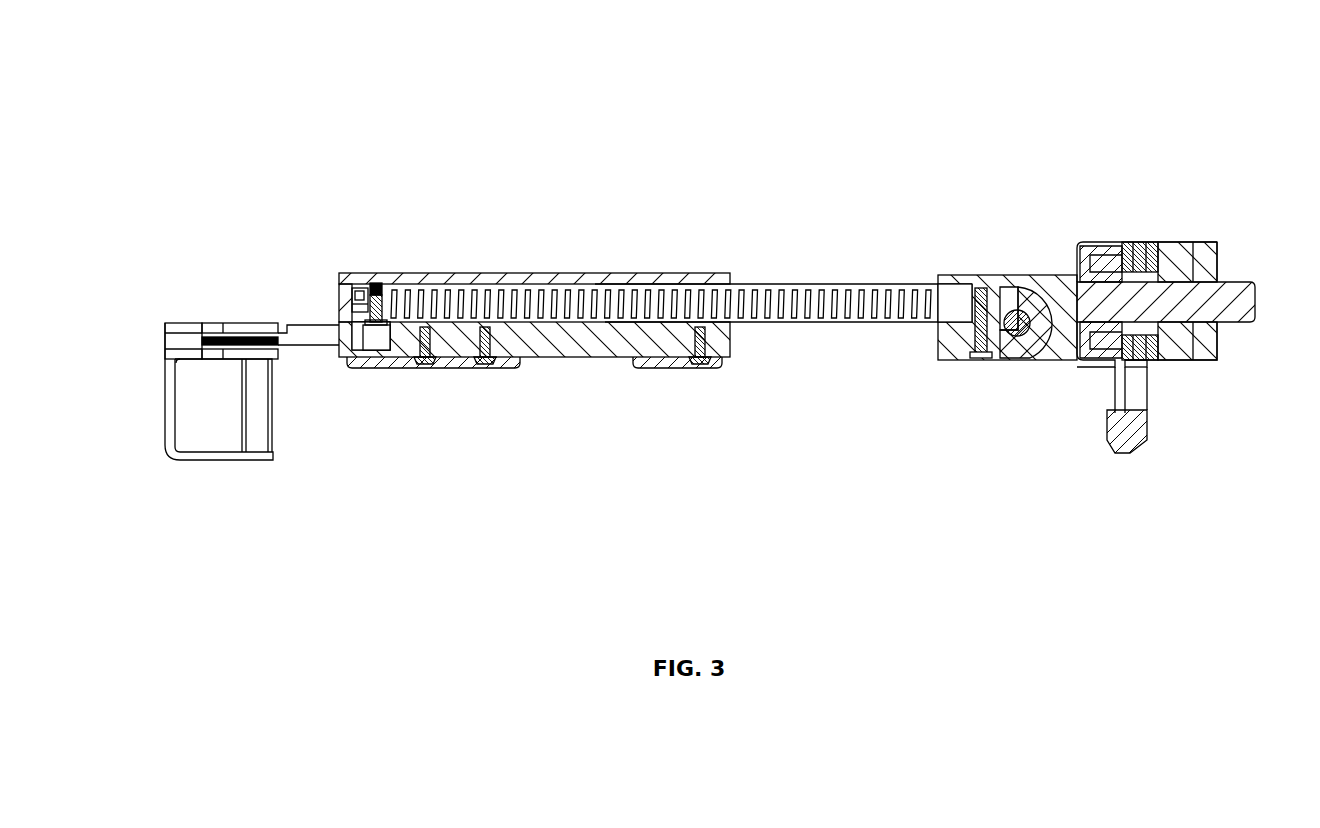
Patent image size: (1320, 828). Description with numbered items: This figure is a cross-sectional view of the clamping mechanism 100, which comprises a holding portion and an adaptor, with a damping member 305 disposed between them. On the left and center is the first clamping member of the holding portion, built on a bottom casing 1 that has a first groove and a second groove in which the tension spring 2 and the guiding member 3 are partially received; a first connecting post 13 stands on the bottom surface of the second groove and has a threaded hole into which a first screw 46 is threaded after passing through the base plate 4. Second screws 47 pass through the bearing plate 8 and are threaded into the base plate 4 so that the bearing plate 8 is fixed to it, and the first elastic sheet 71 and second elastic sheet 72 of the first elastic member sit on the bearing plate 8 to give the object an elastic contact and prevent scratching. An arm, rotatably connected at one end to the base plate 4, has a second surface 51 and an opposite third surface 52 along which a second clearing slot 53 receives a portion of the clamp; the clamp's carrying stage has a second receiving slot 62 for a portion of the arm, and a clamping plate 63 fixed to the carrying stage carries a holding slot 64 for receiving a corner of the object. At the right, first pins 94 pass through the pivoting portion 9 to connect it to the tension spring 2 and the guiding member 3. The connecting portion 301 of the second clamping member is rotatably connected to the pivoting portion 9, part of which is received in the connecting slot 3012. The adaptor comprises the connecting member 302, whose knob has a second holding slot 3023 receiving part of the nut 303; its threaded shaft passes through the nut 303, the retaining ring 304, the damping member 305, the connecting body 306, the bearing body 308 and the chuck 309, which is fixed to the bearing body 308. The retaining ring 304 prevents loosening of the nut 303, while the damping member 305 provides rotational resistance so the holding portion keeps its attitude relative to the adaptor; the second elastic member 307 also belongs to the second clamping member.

The clamping mechanism 100 is at (733, 100).
The bottom casing 1 is at (553, 278).
The tension spring 2 is at (445, 292).
The guiding member 3 is at (845, 284).
The base plate 4 is at (722, 338).
The bearing plate 8 is at (728, 357).
The pivoting portion 9 is at (988, 275).
The first connecting post 13 is at (380, 283).
The first screw 46 is at (372, 273).
The second screw 47 is at (700, 364).
The second surface 51 is at (297, 347).
The third surface 52 is at (297, 323).
The second clearing slot 53 is at (283, 322).
The second receiving slot 62 is at (178, 341).
The clamping plate 63 is at (253, 462).
The holding slot 64 is at (208, 442).
The first elastic sheet 71 is at (462, 368).
The second elastic sheet 72 is at (668, 368).
The first pin 94 is at (977, 360).
The connecting portion 301 is at (1045, 278).
The connecting member 302 is at (1103, 245).
The nut 303 is at (1110, 265).
The retaining ring 304 is at (1130, 248).
The damping member 305 is at (1150, 362).
The connecting body 306 is at (1147, 440).
The second elastic member 307 is at (1110, 455).
The bearing body 308 is at (1170, 352).
The chuck 309 is at (1215, 345).
The connecting slot 3012 is at (1045, 360).
The second holding slot 3023 is at (1100, 360).